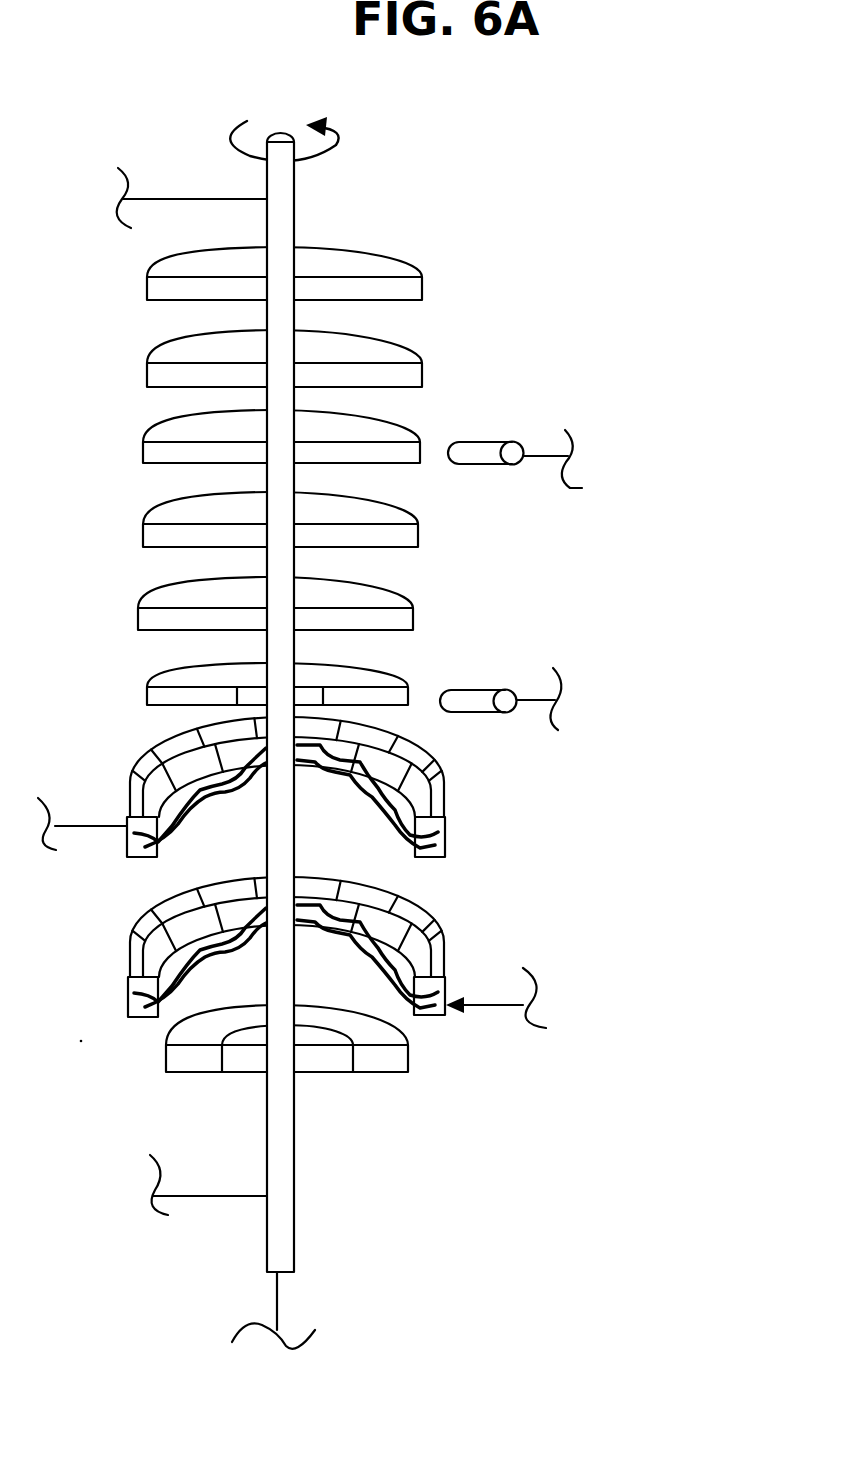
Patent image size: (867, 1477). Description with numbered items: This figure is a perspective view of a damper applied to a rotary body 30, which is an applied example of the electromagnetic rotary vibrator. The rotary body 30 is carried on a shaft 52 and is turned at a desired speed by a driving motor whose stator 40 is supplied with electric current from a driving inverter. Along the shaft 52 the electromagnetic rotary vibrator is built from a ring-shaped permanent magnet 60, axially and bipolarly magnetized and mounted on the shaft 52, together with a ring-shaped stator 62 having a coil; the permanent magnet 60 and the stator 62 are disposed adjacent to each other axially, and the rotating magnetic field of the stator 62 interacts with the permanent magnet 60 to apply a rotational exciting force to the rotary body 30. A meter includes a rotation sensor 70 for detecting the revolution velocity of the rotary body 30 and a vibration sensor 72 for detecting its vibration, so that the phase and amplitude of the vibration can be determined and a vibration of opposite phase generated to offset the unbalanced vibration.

The rotary body 30 is at (437, 293).
The vibration sensor 72 is at (491, 440).
The rotation sensor 70 is at (486, 690).
The stator 40 is at (437, 826).
The stator 62 is at (134, 1017).
The permanent magnet 60 is at (409, 1058).
The shaft 52 is at (285, 1234).